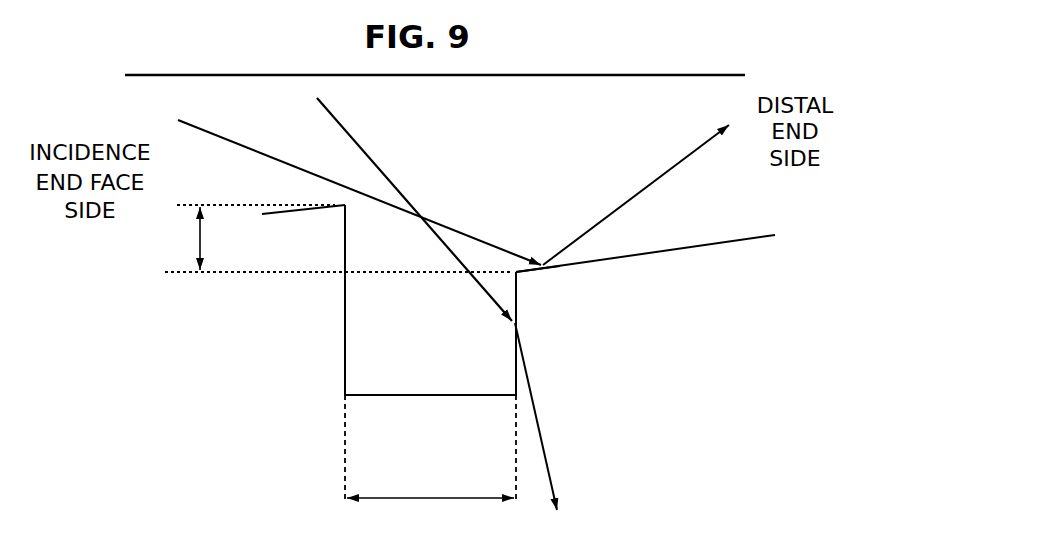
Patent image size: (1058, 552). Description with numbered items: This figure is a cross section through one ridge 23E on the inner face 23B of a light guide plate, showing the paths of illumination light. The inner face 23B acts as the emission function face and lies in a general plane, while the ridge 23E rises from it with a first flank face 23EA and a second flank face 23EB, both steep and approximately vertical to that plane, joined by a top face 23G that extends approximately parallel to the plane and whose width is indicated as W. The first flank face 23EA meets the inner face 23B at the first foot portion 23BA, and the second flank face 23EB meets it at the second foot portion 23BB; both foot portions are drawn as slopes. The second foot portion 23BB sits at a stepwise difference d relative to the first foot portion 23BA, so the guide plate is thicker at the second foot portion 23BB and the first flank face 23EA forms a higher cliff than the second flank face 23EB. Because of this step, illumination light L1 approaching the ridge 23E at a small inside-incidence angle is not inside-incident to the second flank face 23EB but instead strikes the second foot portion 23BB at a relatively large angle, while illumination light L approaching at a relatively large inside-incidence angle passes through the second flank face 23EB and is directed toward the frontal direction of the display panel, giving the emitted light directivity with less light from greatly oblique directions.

The illumination light L1 is at (223, 135).
The illumination light L is at (355, 133).
The first foot portion 23BA is at (303, 214).
The ridge 23E is at (345, 310).
The first flank face 23EA is at (345, 367).
The second flank face 23EB is at (517, 305).
The top face 23G is at (449, 399).
The inner face 23B is at (643, 255).
The second foot portion 23BB is at (545, 282).
The stepwise difference d is at (187, 238).
The groove width W is at (430, 484).